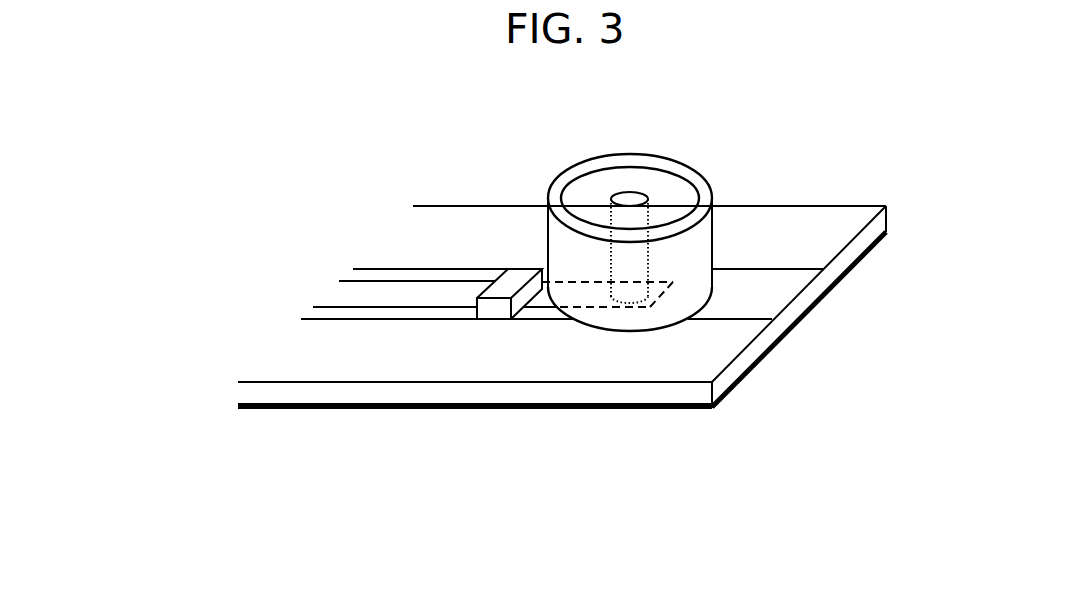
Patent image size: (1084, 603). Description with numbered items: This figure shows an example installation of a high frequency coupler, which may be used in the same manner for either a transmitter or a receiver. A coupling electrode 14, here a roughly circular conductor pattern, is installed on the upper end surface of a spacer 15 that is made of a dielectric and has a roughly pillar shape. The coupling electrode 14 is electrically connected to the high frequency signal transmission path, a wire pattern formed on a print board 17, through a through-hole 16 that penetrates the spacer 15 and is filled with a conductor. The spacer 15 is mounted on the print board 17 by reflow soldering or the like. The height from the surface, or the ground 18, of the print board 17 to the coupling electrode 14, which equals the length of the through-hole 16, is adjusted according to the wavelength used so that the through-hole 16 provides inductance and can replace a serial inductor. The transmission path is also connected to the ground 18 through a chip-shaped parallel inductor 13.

The parallel inductor 13 is at (495, 312).
The coupling electrode 14 is at (642, 173).
The spacer 15 is at (698, 250).
The through-hole 16 is at (647, 267).
The print board 17 is at (663, 393).
The ground 18 is at (303, 410).